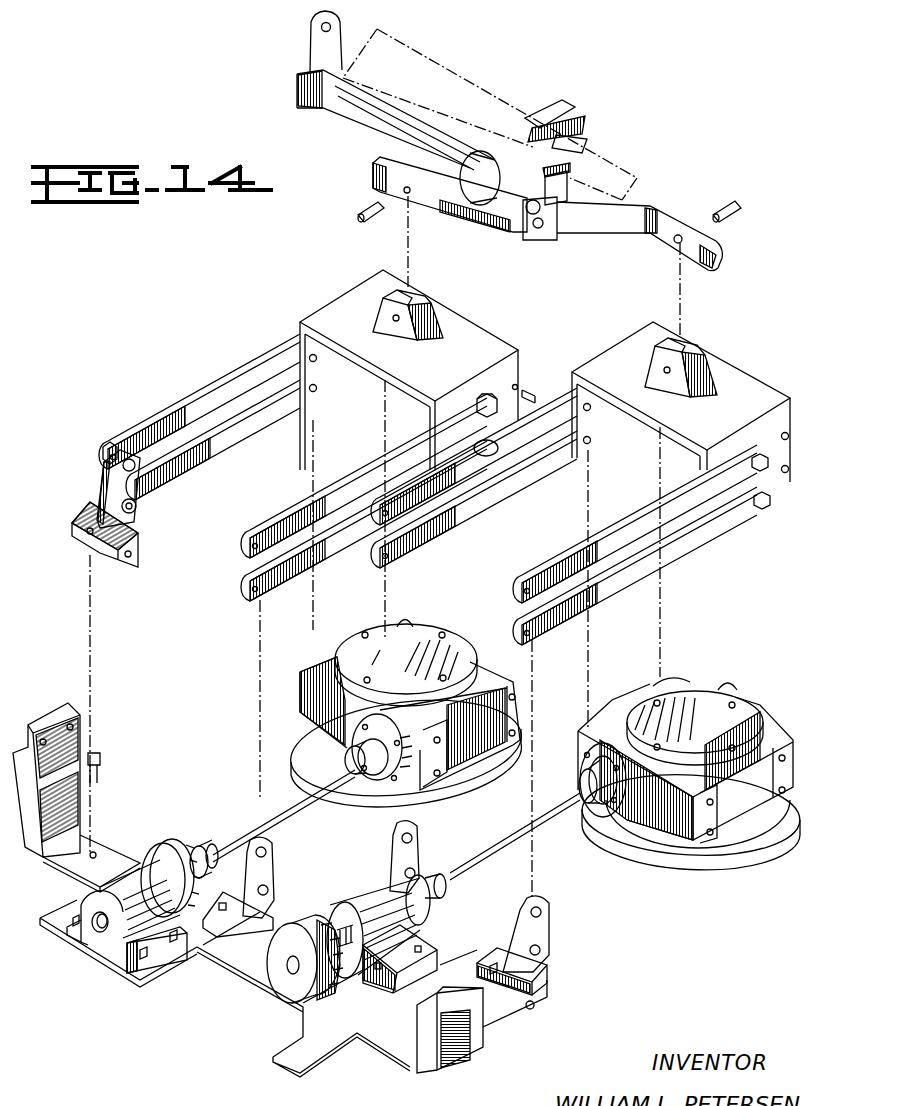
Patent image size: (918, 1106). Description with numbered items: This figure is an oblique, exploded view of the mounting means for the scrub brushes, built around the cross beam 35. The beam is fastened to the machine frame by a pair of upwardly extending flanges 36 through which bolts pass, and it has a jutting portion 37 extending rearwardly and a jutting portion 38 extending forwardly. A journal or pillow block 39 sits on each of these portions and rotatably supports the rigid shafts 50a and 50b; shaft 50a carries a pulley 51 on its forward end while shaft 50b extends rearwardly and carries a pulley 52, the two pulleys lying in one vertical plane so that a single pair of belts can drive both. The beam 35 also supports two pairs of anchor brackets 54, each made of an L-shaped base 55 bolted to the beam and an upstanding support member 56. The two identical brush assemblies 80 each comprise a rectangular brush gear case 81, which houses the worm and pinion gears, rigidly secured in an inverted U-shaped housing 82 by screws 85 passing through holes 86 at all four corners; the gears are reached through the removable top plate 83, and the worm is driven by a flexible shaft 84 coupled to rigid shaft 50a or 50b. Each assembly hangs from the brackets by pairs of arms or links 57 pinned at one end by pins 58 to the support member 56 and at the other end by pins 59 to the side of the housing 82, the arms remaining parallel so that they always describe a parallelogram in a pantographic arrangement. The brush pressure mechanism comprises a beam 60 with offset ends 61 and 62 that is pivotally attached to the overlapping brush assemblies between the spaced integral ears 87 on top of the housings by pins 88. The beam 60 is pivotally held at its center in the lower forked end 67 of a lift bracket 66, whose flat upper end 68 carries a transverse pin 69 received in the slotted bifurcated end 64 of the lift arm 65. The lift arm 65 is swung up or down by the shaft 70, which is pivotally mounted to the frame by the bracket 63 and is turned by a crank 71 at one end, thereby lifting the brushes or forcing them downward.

The cross beam 35 is at (393, 1040).
The upwardly extending flanges 36 is at (73, 745).
The jutting portion 37 is at (60, 923).
The jutting portion 38 is at (425, 931).
The journal or pillow blocks 39 is at (150, 960).
The rigid shaft 50a is at (200, 849).
The rigid shaft 50b is at (424, 875).
The pulley 51 is at (168, 842).
The pulley 52 is at (290, 990).
The anchor brackets 54 is at (142, 519).
The L-shaped base 55 is at (140, 547).
The upstanding support member 56 is at (120, 485).
The arms or links 57 is at (209, 397).
The pins 58 is at (128, 452).
The pins 59 is at (480, 400).
The beam 60 is at (628, 216).
The offset end 61 is at (690, 228).
The offset end 62 is at (378, 163).
The bracket 63 is at (449, 97).
The slotted bifurcated end 64 is at (580, 118).
The lift arm 65 is at (508, 142).
The lift bracket 66 is at (570, 175).
The lower forked end 67 is at (545, 236).
The upper end 68 is at (530, 118).
The transverse pin 69 is at (587, 141).
The shaft 70 is at (342, 108).
The crank 71 is at (330, 38).
The brush assemblies 80 is at (470, 300).
The brush gear case 81 is at (478, 656).
The inverted U-shaped housing 82 is at (490, 345).
The removable top plate 83 is at (418, 633).
The flexible shaft 84 is at (292, 813).
The screws 85 is at (537, 392).
The holes 86 is at (517, 385).
The spaced integral ears 87 is at (420, 298).
The pins 88 is at (362, 212).